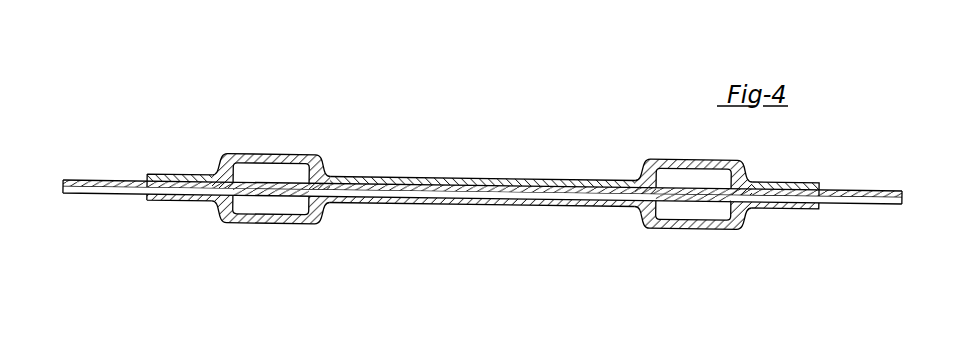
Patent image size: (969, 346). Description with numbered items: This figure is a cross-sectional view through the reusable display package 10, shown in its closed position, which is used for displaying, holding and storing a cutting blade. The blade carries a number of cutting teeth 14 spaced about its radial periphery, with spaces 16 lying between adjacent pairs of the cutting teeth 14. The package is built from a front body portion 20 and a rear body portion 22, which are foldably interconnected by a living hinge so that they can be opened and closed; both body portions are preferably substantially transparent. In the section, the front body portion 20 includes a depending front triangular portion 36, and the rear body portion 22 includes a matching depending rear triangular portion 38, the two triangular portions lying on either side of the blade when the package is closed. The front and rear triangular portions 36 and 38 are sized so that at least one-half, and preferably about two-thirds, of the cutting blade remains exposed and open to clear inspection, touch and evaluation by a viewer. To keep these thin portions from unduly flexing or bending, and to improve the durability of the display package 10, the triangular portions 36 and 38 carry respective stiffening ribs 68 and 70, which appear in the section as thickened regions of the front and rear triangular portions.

The reusable display package 10 is at (596, 108).
The cutting teeth 14 is at (882, 190).
The spaces 16 is at (870, 203).
The front body portion 20 is at (717, 240).
The rear body portion 22 is at (760, 160).
The front triangular portion 36 is at (665, 160).
The rear triangular portion 38 is at (510, 226).
The stiffening rib 68 is at (292, 224).
The stiffening rib 70 is at (299, 156).